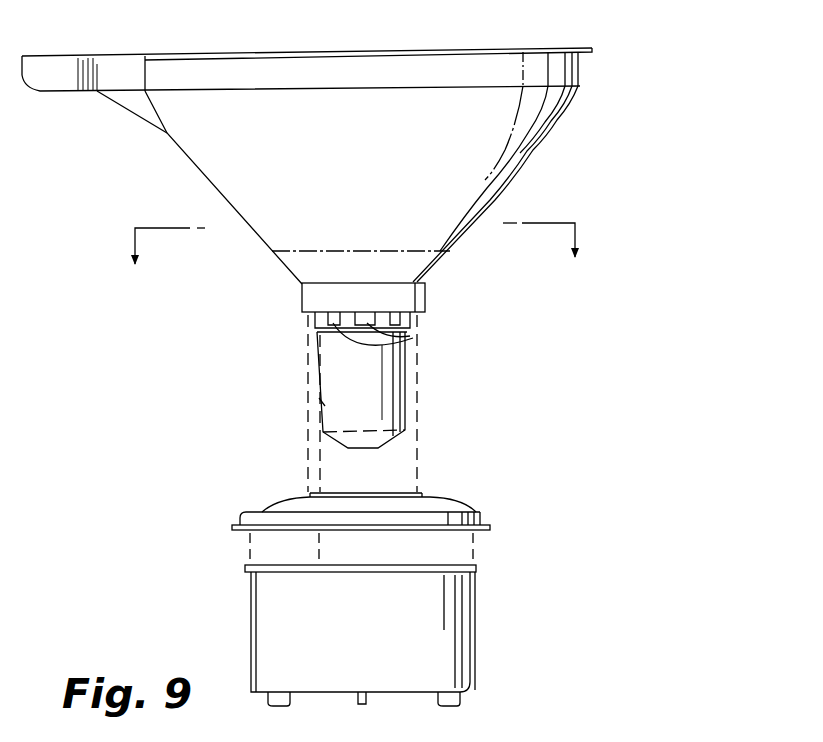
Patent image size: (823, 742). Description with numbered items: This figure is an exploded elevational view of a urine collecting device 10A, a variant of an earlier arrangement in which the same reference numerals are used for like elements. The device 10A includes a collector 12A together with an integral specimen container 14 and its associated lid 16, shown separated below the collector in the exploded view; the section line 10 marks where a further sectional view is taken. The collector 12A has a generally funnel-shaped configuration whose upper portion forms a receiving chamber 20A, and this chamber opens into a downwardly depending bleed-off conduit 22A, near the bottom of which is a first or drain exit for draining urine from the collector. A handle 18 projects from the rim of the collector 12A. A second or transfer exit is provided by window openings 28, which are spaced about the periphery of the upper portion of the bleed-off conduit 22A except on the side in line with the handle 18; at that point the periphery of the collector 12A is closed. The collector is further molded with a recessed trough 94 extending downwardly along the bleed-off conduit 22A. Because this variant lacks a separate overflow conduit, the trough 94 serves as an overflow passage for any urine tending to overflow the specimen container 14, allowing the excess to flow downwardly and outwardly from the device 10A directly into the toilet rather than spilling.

The device 10A is at (709, 79).
The receiving chamber 20A is at (474, 49).
The handle 18 is at (68, 95).
The collector 12A is at (529, 172).
The window openings 28 is at (410, 338).
The bleed-off conduit 22A is at (403, 407).
The recessed trough 94 is at (322, 402).
The lid 16 is at (457, 493).
The specimen container 14 is at (478, 626).
The section line 10- 10 is at (358, 265).